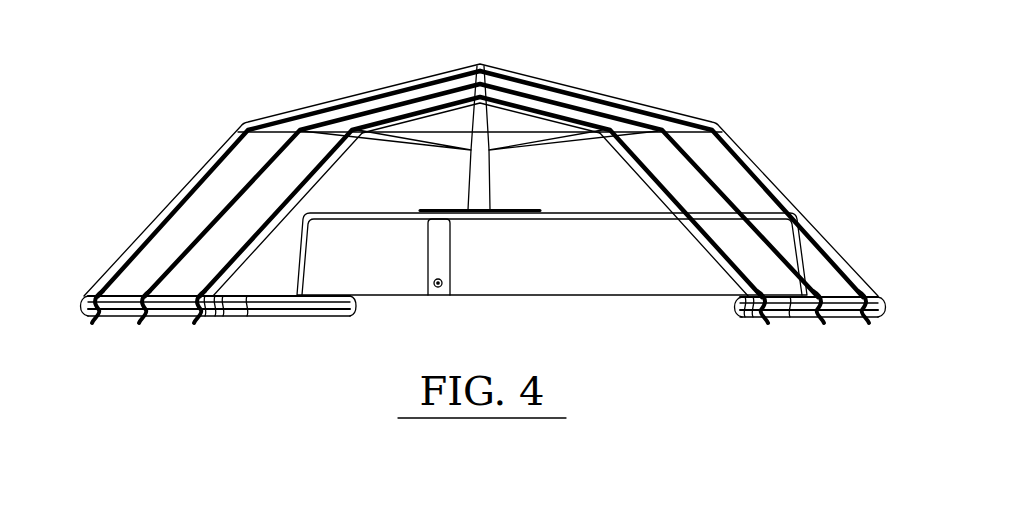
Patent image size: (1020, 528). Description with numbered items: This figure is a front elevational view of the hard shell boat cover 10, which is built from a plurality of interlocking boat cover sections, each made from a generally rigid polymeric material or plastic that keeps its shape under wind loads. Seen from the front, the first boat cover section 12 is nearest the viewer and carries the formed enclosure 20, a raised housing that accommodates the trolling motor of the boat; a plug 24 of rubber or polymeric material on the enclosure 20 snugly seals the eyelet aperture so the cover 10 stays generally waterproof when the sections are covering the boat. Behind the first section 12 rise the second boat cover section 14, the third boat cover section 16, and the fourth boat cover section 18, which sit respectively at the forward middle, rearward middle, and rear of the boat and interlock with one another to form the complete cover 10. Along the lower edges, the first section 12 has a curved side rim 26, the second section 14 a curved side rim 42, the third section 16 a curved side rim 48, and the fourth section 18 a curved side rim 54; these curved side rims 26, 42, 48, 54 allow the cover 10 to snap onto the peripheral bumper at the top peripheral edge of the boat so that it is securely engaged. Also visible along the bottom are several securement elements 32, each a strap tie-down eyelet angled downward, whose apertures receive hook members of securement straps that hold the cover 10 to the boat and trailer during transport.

The hard shell boat cover 10 is at (115, 410).
The first boat cover section 12 is at (590, 170).
The second boat cover section 14 is at (290, 170).
The third boat cover section 16 is at (220, 193).
The fourth boat cover section 18 is at (757, 173).
The formed enclosure 20 is at (550, 280).
The plug 24 is at (438, 288).
The curved side rim 26 is at (291, 300).
The securement element 32 is at (135, 322).
The curved side rim 42 is at (170, 300).
The curved side rim 48 is at (117, 300).
The curved side rim 54 is at (84, 300).